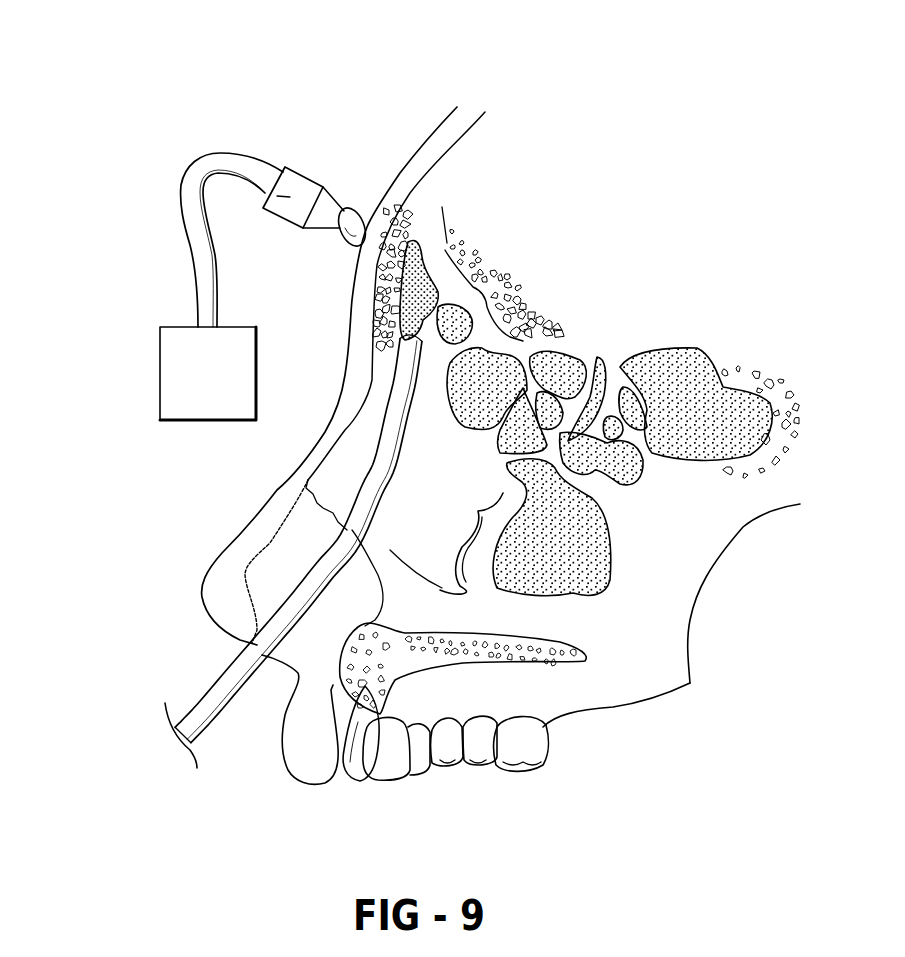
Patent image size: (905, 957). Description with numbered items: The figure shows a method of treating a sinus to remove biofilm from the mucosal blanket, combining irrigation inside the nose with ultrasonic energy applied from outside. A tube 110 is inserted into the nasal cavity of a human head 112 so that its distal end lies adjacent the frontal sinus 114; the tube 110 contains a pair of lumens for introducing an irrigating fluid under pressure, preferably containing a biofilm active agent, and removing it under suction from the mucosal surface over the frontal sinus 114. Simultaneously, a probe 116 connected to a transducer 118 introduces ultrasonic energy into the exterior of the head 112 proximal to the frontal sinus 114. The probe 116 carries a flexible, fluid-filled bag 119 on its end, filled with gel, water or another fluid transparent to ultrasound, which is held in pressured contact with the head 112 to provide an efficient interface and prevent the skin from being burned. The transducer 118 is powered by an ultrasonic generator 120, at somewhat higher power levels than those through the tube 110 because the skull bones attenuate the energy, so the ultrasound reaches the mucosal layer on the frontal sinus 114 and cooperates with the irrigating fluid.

The tube 110 is at (282, 563).
The human head 112 is at (424, 82).
The frontal sinus 114 is at (418, 259).
The probe 116 is at (338, 200).
The transducer 118 is at (305, 180).
The flexible, fluid-filled bag 119 is at (343, 243).
The ultrasonic generator 120 is at (178, 369).